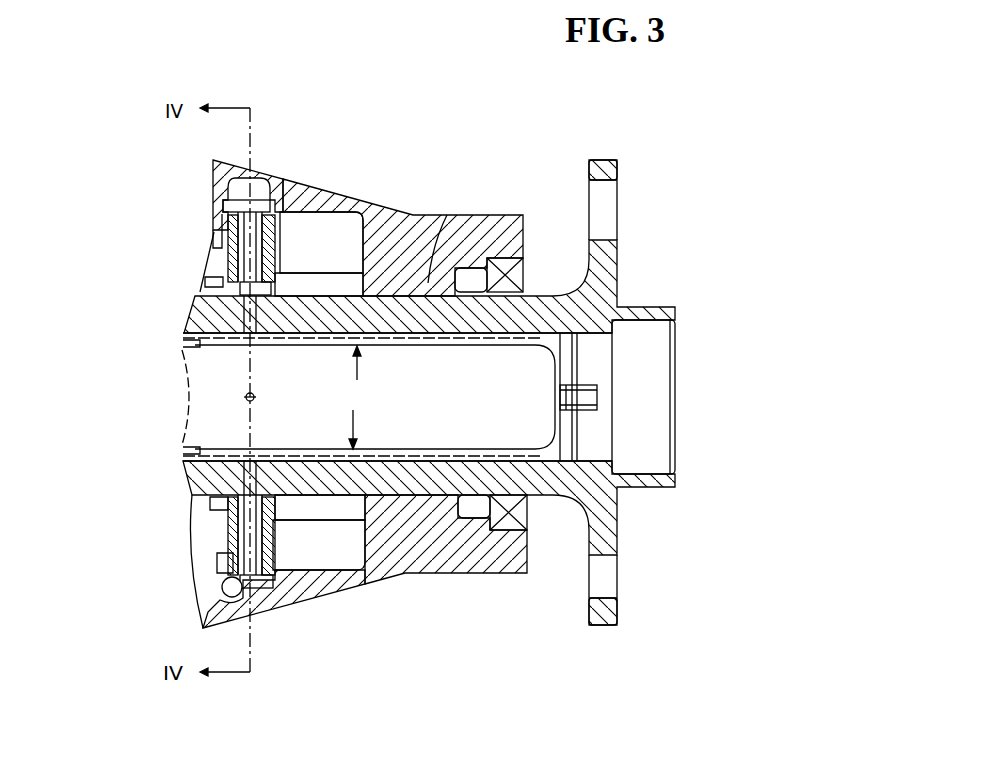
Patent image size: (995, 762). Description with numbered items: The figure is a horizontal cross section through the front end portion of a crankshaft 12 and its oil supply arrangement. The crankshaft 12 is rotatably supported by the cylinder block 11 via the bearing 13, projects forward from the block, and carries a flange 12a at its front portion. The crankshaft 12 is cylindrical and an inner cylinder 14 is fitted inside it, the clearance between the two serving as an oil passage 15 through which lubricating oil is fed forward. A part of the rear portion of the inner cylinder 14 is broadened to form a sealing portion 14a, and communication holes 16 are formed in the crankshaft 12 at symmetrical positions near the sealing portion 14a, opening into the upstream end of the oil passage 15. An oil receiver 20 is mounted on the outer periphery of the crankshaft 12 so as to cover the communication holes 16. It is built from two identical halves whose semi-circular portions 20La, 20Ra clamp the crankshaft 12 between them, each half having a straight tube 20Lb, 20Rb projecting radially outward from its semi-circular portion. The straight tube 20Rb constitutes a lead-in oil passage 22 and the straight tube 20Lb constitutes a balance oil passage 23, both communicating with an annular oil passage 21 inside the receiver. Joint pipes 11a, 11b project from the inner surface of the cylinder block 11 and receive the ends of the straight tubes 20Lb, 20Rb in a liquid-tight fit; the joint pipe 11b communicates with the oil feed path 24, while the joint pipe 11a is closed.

The cylinder block 11 is at (363, 183).
The joint pipe 11a is at (222, 228).
The joint pipe 11b is at (305, 585).
The crankshaft 12 is at (321, 242).
The flange 12a is at (619, 168).
The bearing 13 is at (462, 213).
The inner cylinder 14 is at (434, 346).
The sealing portion 14a is at (183, 350).
The oil passage 15 is at (363, 407).
The communication holes 16 is at (247, 307).
The oil receiver 20 is at (287, 234).
The semi-circular portion 20La is at (207, 280).
The straight tube 20Lb is at (214, 244).
The semi-circular portion 20Ra is at (226, 503).
The straight tube 20Rb is at (225, 540).
The annular oil passage 21 is at (283, 289).
The lead-in oil passage 22 is at (262, 542).
The balance oil passage 23 is at (258, 245).
The oil feed path 24 is at (222, 590).